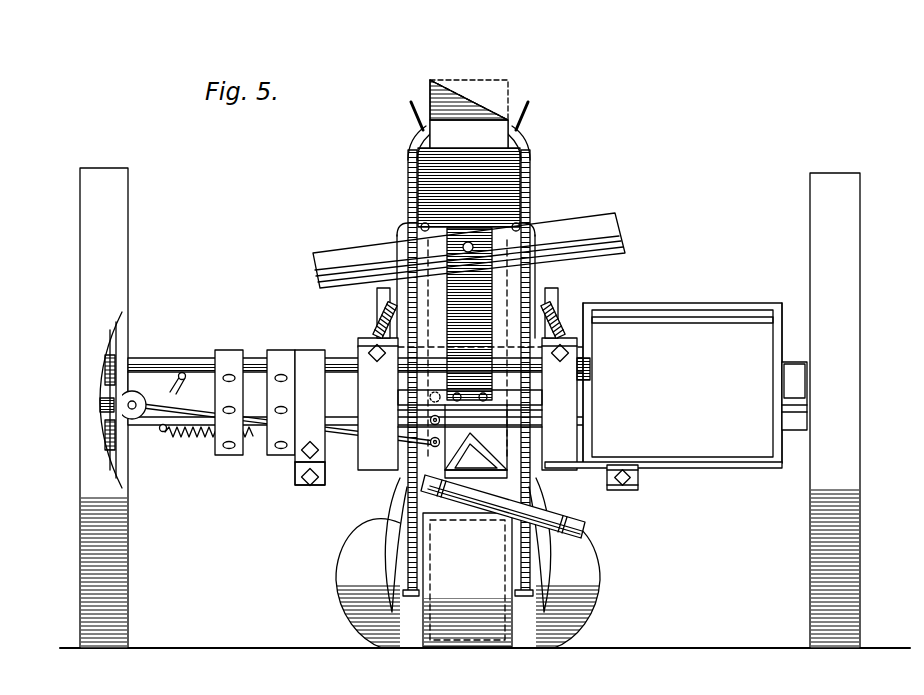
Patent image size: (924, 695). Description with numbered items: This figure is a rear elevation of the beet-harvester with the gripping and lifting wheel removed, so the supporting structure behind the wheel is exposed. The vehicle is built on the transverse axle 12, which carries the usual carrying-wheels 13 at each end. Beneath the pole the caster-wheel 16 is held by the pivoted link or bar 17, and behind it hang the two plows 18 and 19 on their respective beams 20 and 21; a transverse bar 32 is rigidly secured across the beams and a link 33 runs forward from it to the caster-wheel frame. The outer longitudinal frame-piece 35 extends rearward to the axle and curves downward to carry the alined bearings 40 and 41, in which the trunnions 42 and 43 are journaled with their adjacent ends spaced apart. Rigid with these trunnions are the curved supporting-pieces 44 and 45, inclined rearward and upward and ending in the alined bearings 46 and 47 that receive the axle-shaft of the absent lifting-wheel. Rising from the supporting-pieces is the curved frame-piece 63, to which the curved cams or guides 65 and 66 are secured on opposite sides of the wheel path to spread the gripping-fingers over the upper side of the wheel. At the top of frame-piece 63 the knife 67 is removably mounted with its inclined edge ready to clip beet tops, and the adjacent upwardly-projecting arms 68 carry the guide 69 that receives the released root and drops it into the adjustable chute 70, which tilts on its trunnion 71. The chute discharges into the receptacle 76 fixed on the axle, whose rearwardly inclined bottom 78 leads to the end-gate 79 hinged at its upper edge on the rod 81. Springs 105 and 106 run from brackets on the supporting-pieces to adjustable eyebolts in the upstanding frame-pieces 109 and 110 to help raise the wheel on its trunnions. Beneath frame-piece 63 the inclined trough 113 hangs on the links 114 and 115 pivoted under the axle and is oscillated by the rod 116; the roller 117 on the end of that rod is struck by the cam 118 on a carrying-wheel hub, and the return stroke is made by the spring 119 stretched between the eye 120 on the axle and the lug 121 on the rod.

The axle 12 is at (793, 430).
The carrying-wheels 13 is at (128, 237).
The caster-wheel 16 is at (467, 580).
The link or bar 17 is at (476, 441).
The plow 18 is at (590, 582).
The plow 19 is at (340, 574).
The beam 20 is at (548, 493).
The beam 21 is at (391, 508).
The bar 32 is at (462, 487).
The link 33 is at (478, 492).
The longitudinal frame-piece 35 is at (359, 375).
The bearing 40 is at (300, 478).
The bearing 41 is at (639, 469).
The trunnion 42 is at (327, 488).
The trunnion 43 is at (604, 470).
The curved supporting-piece 44 is at (548, 346).
The curved supporting-piece 45 is at (387, 346).
The bearing 46 is at (576, 368).
The bearing 47 is at (370, 352).
The curved frame-piece 63 is at (484, 293).
The curved cam or guide 65 is at (535, 197).
The curved cam or guide 66 is at (408, 200).
The knife 67 is at (486, 110).
The upwardly-projecting arms 68 is at (451, 94).
The guide 69 is at (418, 170).
The adjustable chute 70 is at (575, 223).
The trunnion 71 is at (466, 253).
The receptacle 76 is at (682, 374).
The bottom 78 is at (713, 468).
The end-gate 79 is at (707, 394).
The rod 81 is at (658, 320).
The spring 105 is at (566, 313).
The spring 106 is at (380, 314).
The upstanding frame-piece 109 is at (562, 294).
The upstanding frame-piece 110 is at (377, 291).
The inclined trough 113 is at (582, 526).
The link 114 is at (575, 513).
The link 115 is at (420, 432).
The rod 116 is at (285, 424).
The roller 117 is at (136, 394).
The cam 118 is at (118, 432).
The spring 119 is at (206, 442).
The eye 120 is at (164, 433).
The lug 121 is at (263, 445).